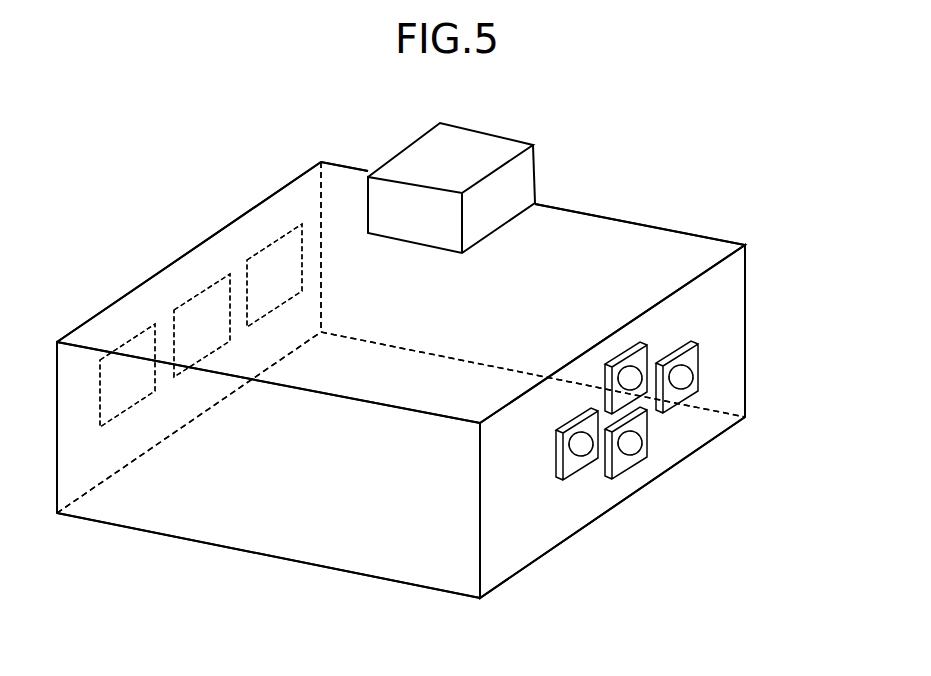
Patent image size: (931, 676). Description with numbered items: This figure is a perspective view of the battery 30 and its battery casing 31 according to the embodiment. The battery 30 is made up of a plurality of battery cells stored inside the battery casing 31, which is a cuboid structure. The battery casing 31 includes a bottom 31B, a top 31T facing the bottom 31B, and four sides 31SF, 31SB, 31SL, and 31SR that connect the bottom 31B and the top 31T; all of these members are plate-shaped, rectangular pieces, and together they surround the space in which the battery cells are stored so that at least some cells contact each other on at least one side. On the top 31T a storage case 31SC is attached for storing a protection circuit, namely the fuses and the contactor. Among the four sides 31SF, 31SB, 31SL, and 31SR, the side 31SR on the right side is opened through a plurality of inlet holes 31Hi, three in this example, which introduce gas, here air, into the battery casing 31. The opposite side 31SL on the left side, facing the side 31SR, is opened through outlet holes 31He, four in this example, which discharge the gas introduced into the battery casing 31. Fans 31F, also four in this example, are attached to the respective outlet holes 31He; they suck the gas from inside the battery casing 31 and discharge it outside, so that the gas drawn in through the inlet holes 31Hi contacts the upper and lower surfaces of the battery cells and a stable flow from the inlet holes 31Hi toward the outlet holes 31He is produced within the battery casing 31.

The battery 30 is at (262, 157).
The battery casing 31 is at (441, 387).
The side 31SF is at (252, 525).
The top 31T is at (560, 230).
The side on the left side 31SL is at (700, 314).
The side on the right side 31SR is at (186, 287).
The side 31SB is at (650, 260).
The bottom 31B is at (391, 518).
The inlet holes 31Hi is at (265, 306).
The storage case 31SC is at (493, 133).
The fans 31F is at (688, 400).
The outlet holes 31He is at (685, 415).